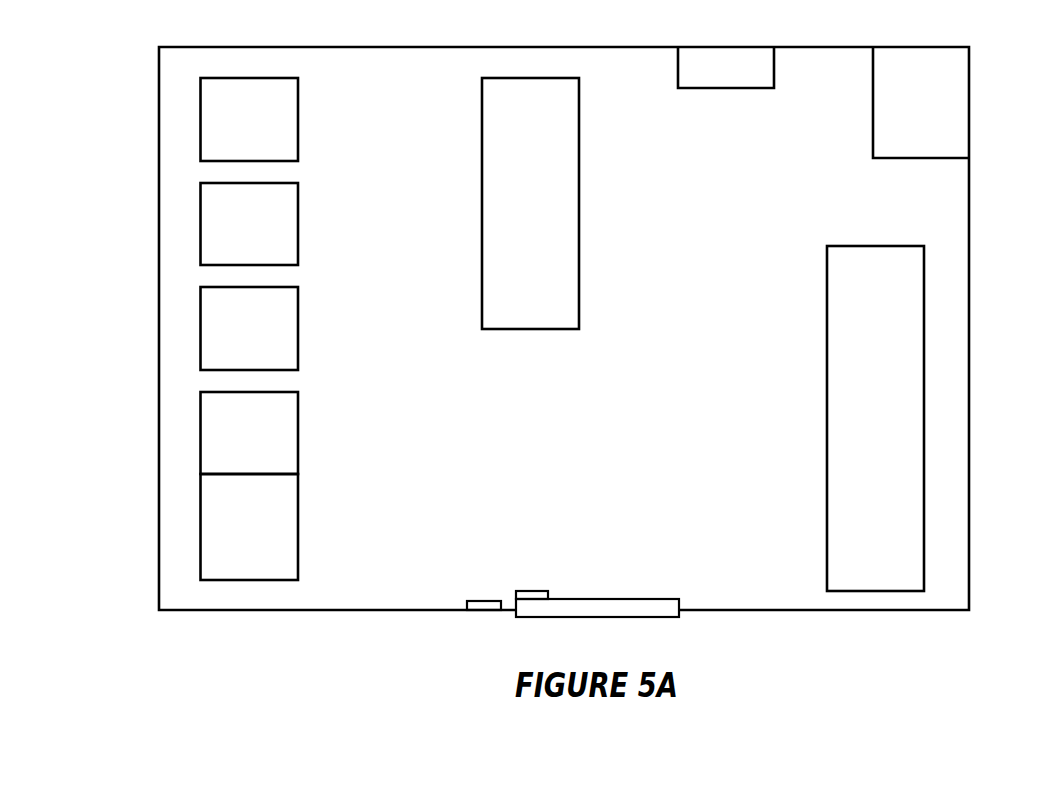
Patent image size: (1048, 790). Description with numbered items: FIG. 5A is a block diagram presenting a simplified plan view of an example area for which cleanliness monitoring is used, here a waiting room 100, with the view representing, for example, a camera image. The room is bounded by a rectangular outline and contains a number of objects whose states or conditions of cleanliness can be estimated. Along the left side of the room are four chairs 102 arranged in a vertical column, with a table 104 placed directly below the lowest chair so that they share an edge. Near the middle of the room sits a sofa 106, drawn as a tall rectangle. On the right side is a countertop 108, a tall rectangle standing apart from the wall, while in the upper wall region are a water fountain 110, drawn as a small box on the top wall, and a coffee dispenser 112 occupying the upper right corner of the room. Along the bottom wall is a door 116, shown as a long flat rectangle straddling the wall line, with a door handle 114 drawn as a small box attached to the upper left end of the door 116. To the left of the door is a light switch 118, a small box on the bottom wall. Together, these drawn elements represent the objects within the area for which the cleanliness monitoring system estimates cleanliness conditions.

The facility / enclosure layout 100 is at (969, 518).
The chairs 102 is at (266, 128).
The table 104 is at (266, 536).
The sofa 106 is at (548, 212).
The countertop 108 is at (892, 428).
The water fountain 110 is at (743, 78).
The coffee dispenser 112 is at (938, 110).
The door handle 114 is at (538, 591).
The door 116 is at (622, 599).
The light switch 118 is at (467, 601).